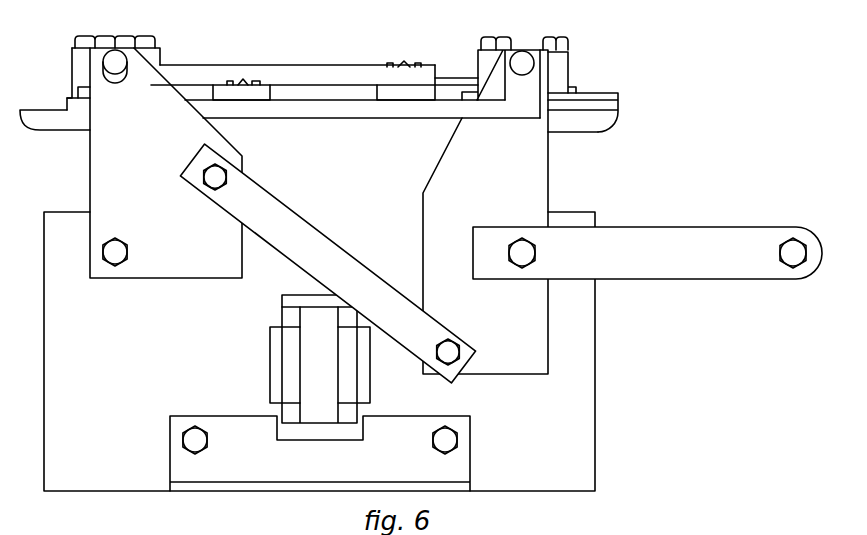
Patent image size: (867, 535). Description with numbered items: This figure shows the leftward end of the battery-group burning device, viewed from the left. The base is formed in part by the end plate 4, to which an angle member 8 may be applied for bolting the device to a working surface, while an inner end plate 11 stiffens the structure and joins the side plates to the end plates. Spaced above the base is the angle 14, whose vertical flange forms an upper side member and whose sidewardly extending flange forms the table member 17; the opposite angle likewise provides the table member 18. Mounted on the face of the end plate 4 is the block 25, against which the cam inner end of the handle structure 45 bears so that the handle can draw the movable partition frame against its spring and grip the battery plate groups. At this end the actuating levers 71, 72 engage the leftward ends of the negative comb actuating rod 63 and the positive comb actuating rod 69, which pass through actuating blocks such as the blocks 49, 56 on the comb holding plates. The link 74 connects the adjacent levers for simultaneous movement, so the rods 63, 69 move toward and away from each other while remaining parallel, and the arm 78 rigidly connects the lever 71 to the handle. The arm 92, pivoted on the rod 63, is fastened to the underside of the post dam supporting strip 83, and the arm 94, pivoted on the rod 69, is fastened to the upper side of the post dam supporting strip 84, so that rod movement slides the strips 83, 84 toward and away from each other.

The end plate 4 is at (578, 393).
The angle member 8 is at (255, 476).
The inner end plate 11 is at (339, 211).
The angle 14 is at (584, 141).
The table member 17 is at (610, 118).
The table member 18 is at (34, 126).
The block 25 is at (268, 361).
The handle structure 45 is at (272, 298).
The actuating block 49 is at (558, 70).
The actuating block 56 is at (158, 56).
The negative comb actuating rod 63 is at (523, 58).
The positive comb actuating rod 69 is at (118, 58).
The actuating lever 71 is at (540, 172).
The actuating lever 72 is at (204, 133).
The link 74 is at (315, 242).
The arm 78 is at (662, 233).
The post dam supporting strip 83 is at (247, 93).
The post dam supporting strip 84 is at (392, 97).
The arm 92 is at (415, 107).
The arm 94 is at (320, 72).